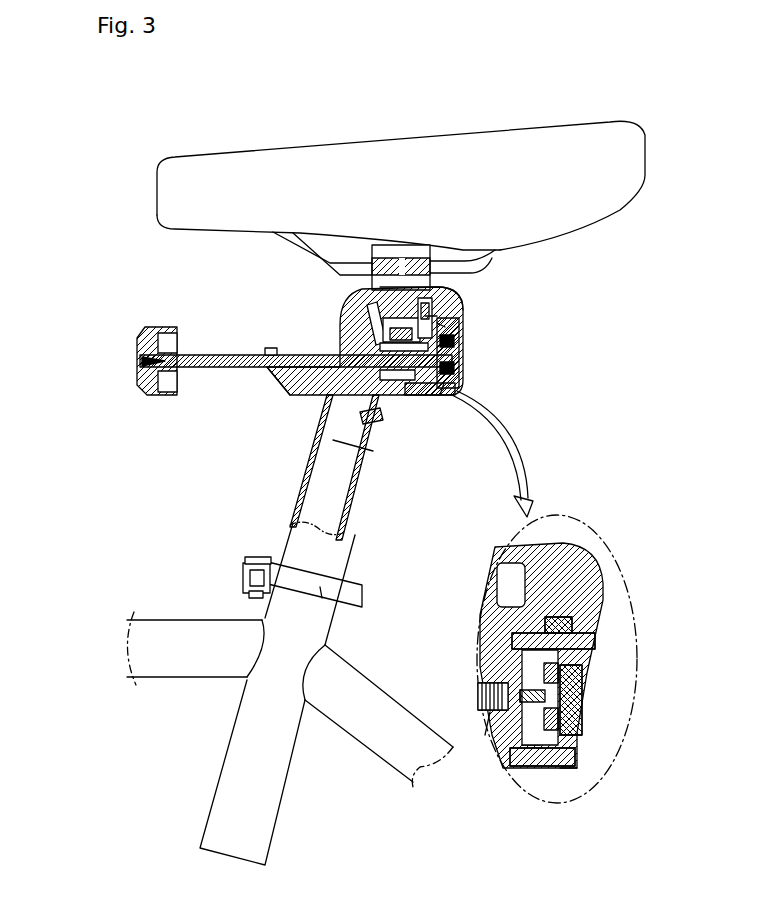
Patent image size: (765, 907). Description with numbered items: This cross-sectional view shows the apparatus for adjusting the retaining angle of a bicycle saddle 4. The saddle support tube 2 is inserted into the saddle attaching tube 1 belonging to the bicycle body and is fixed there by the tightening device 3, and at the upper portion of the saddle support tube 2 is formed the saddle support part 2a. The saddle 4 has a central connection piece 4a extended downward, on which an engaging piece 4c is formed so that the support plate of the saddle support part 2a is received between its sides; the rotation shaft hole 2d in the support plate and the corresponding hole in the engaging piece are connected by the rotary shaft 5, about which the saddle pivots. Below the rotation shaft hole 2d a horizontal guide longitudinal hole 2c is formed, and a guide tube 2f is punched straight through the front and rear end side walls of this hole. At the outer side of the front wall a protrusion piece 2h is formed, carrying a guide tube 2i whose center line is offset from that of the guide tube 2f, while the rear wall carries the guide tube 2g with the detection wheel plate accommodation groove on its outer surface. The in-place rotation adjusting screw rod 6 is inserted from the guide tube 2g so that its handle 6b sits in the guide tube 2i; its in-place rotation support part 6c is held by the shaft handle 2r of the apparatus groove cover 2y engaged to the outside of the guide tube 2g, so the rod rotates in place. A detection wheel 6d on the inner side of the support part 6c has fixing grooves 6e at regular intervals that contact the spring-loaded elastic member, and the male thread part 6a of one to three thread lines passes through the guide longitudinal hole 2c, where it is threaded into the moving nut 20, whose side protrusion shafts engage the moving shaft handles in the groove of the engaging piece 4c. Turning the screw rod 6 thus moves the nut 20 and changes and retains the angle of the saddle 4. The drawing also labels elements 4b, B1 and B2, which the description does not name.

The saddle attaching tube 1 is at (282, 775).
The saddle support tube 2 is at (360, 493).
The saddle support part 2a is at (360, 293).
The guide longitudinal hole 2c is at (445, 395).
The rotation shaft hole 2d is at (437, 296).
The guide tube 2f is at (377, 350).
The guide tube of rear end side wall 2g is at (533, 773).
The protrusion piece 2h is at (300, 383).
The guide tube of protrusion piece 2i is at (272, 348).
The shaft handle 2r is at (460, 352).
The apparatus groove cover 2y is at (460, 363).
The tightening device 3 is at (353, 614).
The bicycle saddle 4 is at (453, 137).
The central connection piece 4a is at (417, 250).
The saddle mounting portion 4b is at (496, 297).
The engaging piece 4c is at (432, 285).
The rotary shaft 5 is at (390, 290).
The in-place rotation adjusting screw rod 6 is at (202, 352).
The male thread part 6a is at (390, 388).
The handle 6b is at (137, 342).
The in-place rotation support part 6c is at (455, 372).
The detection wheel 6d is at (437, 316).
The fixing groove 6e is at (445, 327).
The moving nut 20 is at (433, 403).
The bearing B1 is at (450, 381).
The bearing B2 is at (458, 374).